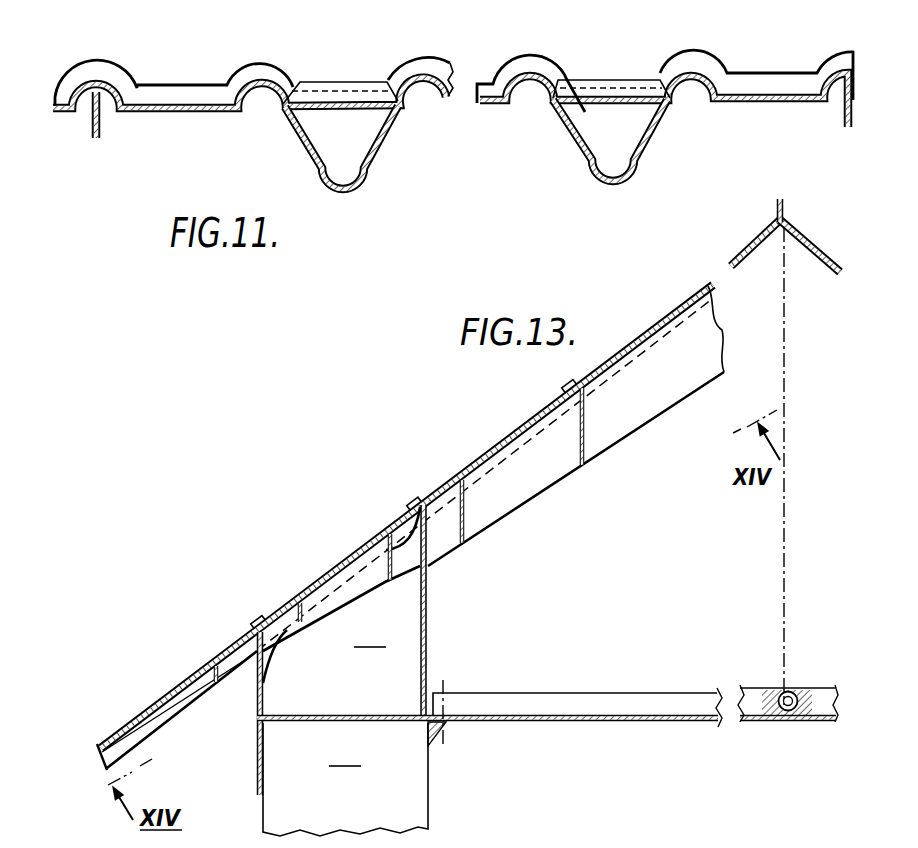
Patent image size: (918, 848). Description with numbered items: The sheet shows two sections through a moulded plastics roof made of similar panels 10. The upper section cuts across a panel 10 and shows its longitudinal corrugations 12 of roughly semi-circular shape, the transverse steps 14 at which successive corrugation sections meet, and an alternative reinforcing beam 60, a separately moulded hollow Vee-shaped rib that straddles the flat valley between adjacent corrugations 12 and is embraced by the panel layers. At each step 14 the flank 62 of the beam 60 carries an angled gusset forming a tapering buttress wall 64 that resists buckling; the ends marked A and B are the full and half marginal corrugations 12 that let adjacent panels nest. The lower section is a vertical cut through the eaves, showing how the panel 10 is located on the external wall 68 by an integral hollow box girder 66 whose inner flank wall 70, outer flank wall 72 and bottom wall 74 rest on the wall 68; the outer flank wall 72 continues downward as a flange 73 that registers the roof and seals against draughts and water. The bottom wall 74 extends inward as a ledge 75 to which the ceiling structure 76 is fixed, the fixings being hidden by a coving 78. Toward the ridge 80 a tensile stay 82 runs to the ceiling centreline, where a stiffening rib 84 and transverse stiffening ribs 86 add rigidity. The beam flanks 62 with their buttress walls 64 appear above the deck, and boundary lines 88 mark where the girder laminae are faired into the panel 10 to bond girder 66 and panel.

In FIG. 11, the panel 10 is at (227, 107).
In FIG. 13, the panel 10 is at (732, 250).
In FIG. 11, the longitudinal corrugation 12 is at (260, 95).
In FIG. 13, the longitudinal corrugation 12 is at (650, 332).
In FIG. 11, the transverse step 14 is at (318, 86).
In FIG. 13, the transverse step 14 is at (572, 385).
In FIG. 11, the reinforcing beam 60 is at (311, 132).
In FIG. 13, the reinforcing beam 60 is at (720, 327).
In FIG. 13, the flank of beam 62 is at (617, 438).
In FIG. 11, the buttress wall 64 is at (318, 128).
In FIG. 13, the buttress wall 64 is at (578, 432).
In FIG. 13, the hollow box girder 66 is at (370, 633).
In FIG. 13, the external wall 68 is at (345, 779).
In FIG. 13, the inner flank wall 70 is at (428, 626).
In FIG. 13, the outer flank wall 72 is at (257, 700).
In FIG. 13, the flange 73 is at (257, 774).
In FIG. 13, the bottom wall 74 is at (357, 715).
In FIG. 13, the ledge 75 is at (450, 715).
In FIG. 13, the ceiling structure 76 is at (753, 717).
In FIG. 13, the ceiling moulding or coving 78 is at (430, 735).
In FIG. 13, the ridge 80 is at (775, 210).
In FIG. 13, the tensile stay 82 is at (782, 511).
In FIG. 13, the stiffening rib 84 is at (781, 690).
In FIG. 13, the transverse stiffening rib 86 is at (737, 690).
In FIG. 13, the boundary line 88 is at (305, 605).